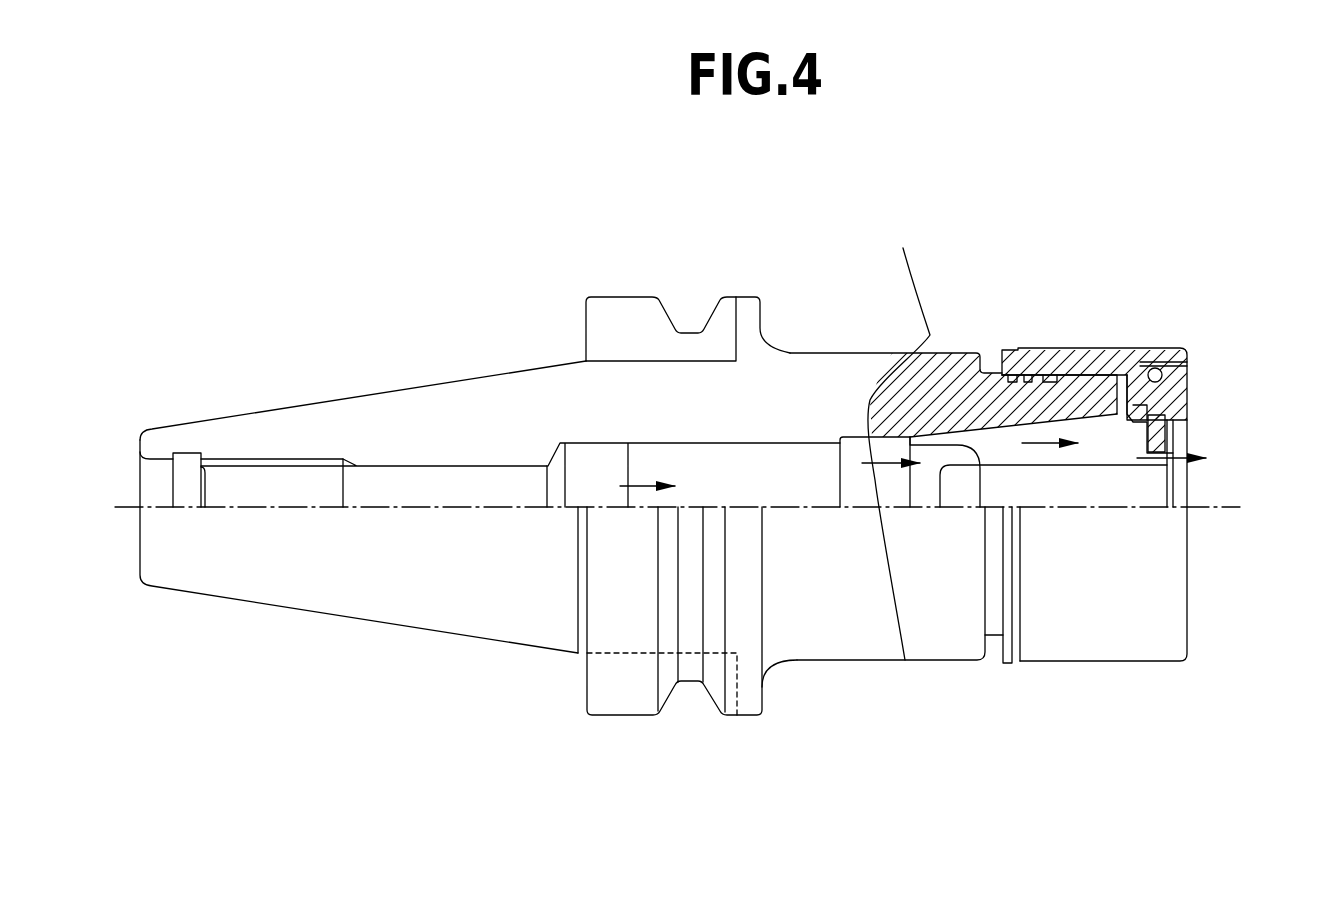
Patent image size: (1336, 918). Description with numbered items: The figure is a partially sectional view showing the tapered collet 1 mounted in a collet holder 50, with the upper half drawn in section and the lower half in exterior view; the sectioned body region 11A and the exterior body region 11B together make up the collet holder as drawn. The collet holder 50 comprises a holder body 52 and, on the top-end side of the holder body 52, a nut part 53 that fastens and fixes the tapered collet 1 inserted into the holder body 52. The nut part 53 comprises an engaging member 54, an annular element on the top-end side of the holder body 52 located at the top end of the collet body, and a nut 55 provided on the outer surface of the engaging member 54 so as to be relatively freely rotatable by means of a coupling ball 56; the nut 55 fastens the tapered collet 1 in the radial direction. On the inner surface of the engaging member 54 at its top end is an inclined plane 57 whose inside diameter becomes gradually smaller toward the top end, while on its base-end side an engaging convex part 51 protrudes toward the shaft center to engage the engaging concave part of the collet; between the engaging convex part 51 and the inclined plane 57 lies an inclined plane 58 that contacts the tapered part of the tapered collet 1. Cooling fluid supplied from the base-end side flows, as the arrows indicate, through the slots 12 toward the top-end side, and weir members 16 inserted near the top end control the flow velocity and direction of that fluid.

The tapered collet 1 is at (1198, 483).
The chuck body, sectioned portion 11A is at (981, 438).
The chuck body, exterior portion 11B is at (1074, 467).
The slots 12 is at (995, 445).
The weir members 16 is at (1172, 437).
The collet holder 50 is at (407, 628).
The engaging convex part 51 is at (1133, 465).
The holder body 52 is at (513, 630).
The nut part 53 is at (1023, 213).
The engaging member 54 is at (1187, 396).
The nut 55 is at (1043, 360).
The coupling ball 56 is at (1156, 367).
The inclined plane 57 is at (1190, 423).
The inclined plane 58 is at (1180, 417).